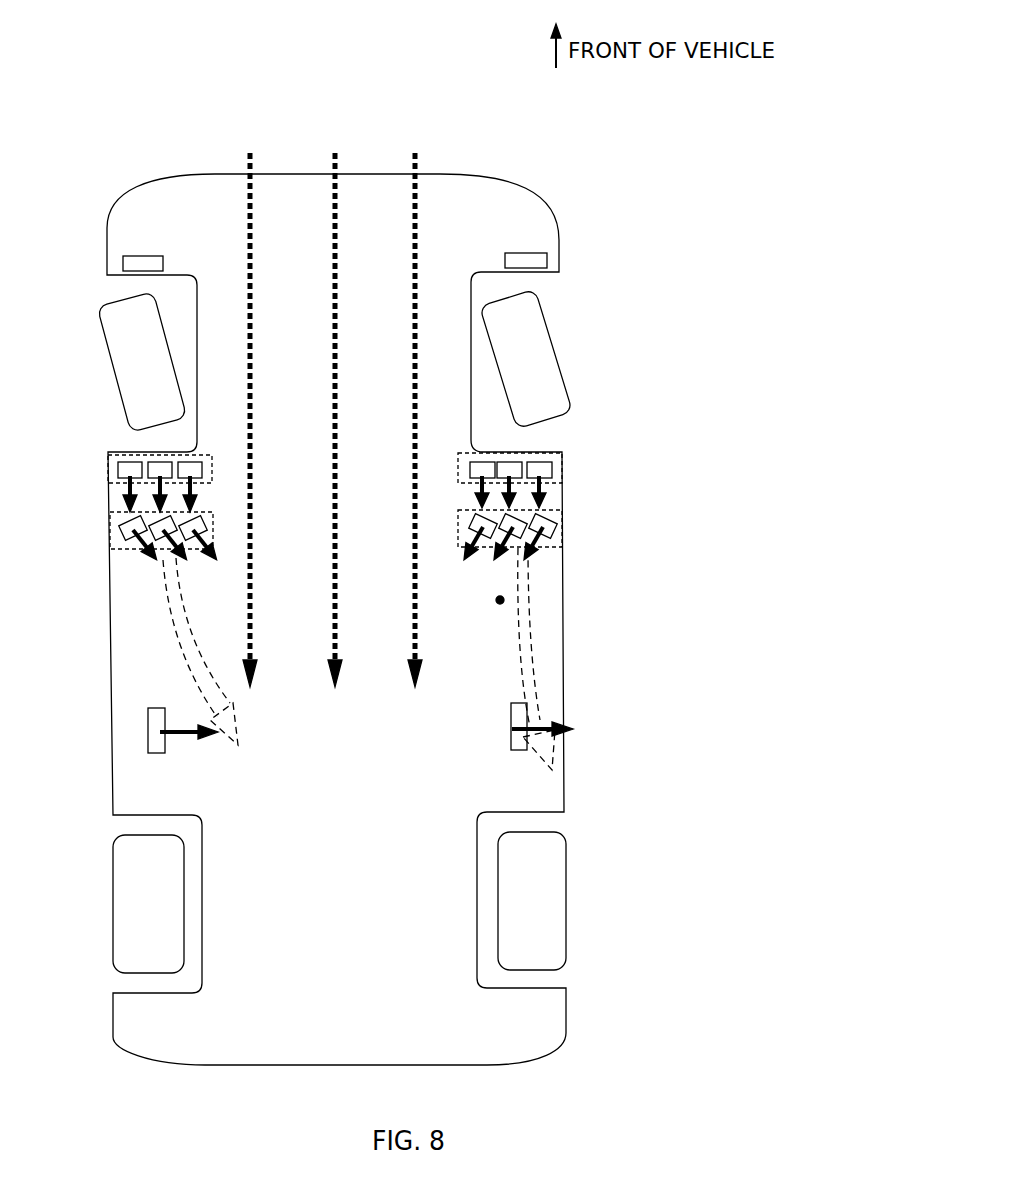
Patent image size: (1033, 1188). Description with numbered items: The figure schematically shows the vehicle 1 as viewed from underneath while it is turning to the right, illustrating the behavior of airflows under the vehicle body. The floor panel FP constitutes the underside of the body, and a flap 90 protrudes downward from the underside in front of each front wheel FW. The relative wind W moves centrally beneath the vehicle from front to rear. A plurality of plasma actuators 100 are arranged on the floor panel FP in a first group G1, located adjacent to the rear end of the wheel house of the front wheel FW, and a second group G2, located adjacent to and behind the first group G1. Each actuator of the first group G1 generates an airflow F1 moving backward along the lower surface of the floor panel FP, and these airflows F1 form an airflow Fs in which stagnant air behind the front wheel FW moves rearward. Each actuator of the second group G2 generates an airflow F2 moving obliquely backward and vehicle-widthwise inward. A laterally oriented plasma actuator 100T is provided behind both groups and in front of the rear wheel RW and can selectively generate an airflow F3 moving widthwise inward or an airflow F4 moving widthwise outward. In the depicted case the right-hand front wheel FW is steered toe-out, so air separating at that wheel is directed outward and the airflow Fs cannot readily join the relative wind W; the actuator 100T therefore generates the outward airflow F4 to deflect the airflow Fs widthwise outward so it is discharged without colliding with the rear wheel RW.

The vehicle 1 is at (289, 156).
The flap 90 is at (543, 260).
The front wheel FW is at (560, 352).
The rear wheel RW is at (564, 910).
The plasma actuator 100 is at (548, 462).
The laterally oriented plasma actuator 100T is at (525, 715).
The first group G1 is at (578, 454).
The second group G2 is at (574, 552).
The floor panel FP is at (500, 600).
The relative wind W is at (332, 406).
The airflow F1 is at (488, 493).
The airflow F2 is at (487, 561).
The airflow Fs is at (516, 659).
The airflow F3 is at (189, 748).
The airflow F4 is at (561, 732).